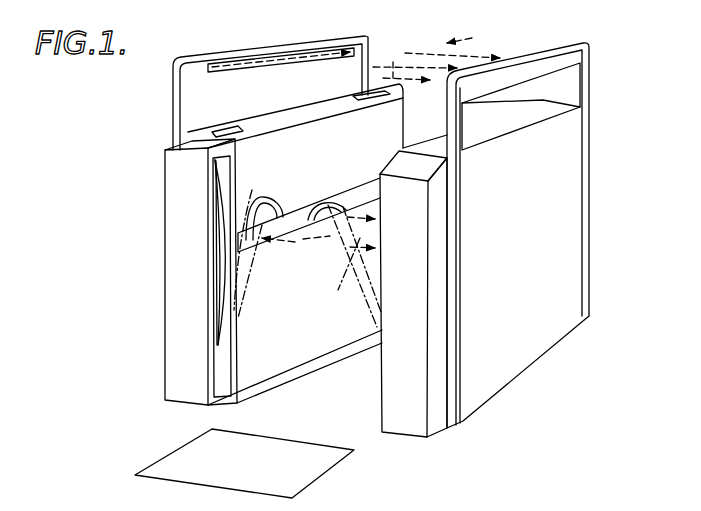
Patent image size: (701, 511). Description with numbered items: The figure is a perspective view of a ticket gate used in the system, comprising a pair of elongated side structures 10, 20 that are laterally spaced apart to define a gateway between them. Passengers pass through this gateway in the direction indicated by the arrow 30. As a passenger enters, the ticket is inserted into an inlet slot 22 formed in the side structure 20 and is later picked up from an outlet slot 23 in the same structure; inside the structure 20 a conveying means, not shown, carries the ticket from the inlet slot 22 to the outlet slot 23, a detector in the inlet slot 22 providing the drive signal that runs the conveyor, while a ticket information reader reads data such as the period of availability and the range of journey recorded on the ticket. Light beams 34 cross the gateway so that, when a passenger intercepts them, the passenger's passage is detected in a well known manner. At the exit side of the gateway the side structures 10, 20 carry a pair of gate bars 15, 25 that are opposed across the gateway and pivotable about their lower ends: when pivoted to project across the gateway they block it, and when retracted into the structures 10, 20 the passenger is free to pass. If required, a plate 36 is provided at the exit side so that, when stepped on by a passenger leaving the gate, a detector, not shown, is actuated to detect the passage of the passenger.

The side structure 10 is at (510, 223).
The gate bar 15 is at (332, 297).
The side structure 20 is at (241, 220).
The inlet slot 22 is at (357, 97).
The outlet slot 23 is at (238, 103).
The gate bar 25 is at (222, 180).
The arrow 30 is at (472, 38).
The light beams 34 is at (420, 52).
The plate 36 is at (302, 446).